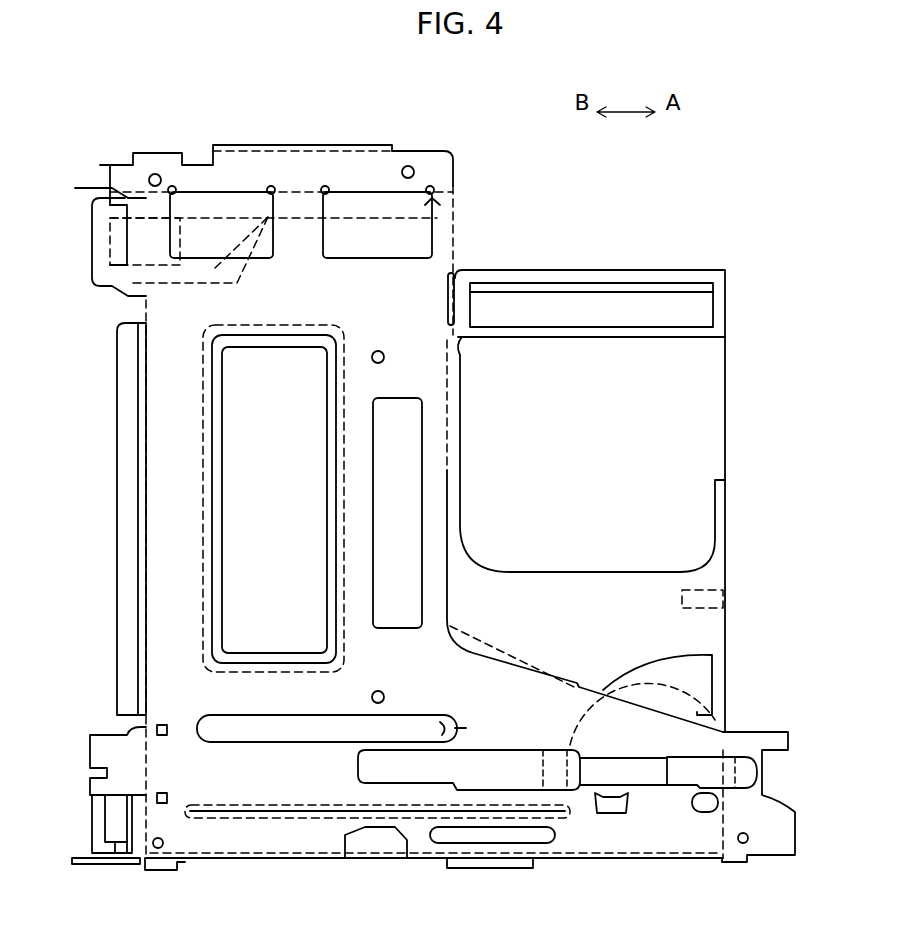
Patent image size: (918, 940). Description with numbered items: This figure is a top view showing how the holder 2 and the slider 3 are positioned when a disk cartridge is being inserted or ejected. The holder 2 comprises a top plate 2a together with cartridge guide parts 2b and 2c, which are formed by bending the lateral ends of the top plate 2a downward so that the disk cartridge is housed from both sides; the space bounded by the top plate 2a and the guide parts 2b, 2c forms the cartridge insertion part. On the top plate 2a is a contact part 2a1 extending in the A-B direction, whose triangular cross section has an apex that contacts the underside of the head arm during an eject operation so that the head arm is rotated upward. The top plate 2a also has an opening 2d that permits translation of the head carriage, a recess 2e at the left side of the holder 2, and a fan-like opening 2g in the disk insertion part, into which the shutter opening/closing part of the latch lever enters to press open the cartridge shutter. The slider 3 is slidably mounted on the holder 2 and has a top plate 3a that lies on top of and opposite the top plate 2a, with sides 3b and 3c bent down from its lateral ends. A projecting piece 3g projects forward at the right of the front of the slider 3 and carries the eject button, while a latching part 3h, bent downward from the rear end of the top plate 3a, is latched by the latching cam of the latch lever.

The holder 2 is at (742, 302).
The top plate 2a is at (657, 632).
The contact part 2a1 is at (570, 292).
The cartridge guide part 2b is at (92, 238).
The cartridge guide part 2c is at (92, 818).
The opening 2d is at (702, 428).
The recess 2e is at (610, 268).
The fan-like opening 2g is at (707, 678).
The slider 3 is at (458, 172).
The top plate 3a is at (162, 478).
The side 3b is at (283, 210).
The side 3c is at (423, 870).
The projecting piece 3g is at (97, 750).
The latching part 3h is at (768, 768).